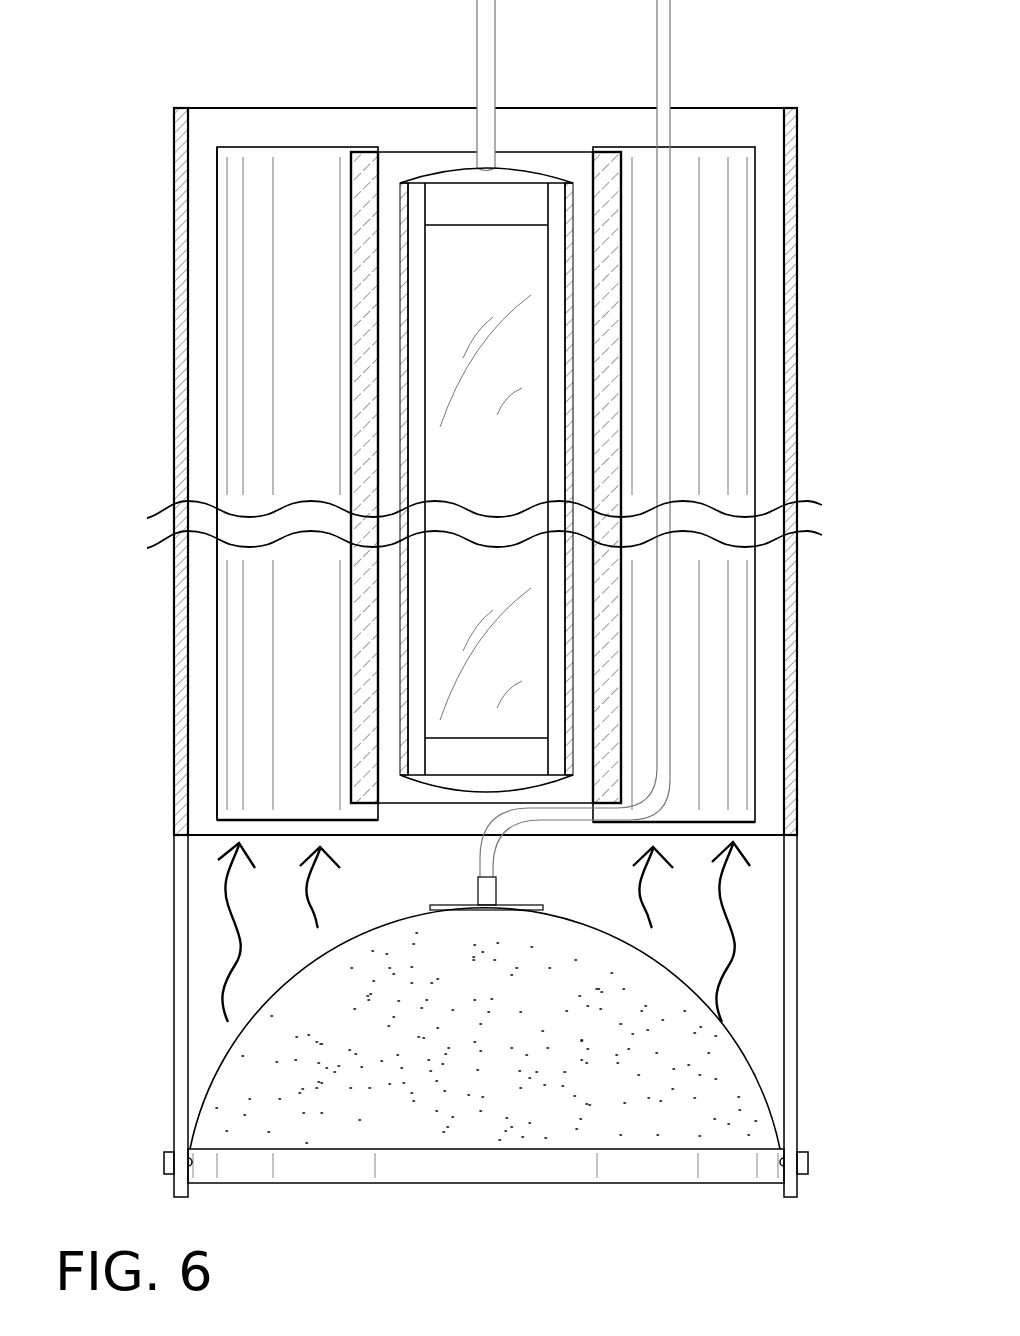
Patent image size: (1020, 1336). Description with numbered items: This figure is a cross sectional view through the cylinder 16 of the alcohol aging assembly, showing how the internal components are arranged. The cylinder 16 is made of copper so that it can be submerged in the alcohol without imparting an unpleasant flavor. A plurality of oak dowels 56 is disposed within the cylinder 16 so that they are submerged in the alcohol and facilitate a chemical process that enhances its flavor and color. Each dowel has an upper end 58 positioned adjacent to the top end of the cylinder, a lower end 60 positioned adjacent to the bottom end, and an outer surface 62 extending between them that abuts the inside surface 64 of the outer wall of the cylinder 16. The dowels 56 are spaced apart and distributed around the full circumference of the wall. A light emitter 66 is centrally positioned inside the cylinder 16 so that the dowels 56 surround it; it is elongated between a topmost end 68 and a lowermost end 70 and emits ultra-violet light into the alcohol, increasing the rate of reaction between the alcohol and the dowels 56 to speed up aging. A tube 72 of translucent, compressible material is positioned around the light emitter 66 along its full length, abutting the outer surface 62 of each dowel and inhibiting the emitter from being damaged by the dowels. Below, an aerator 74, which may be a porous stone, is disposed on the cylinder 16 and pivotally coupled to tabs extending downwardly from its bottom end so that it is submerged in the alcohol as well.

The cylinder 16 is at (173, 263).
The dowels 56 is at (216, 156).
The upper end 58 is at (297, 147).
The lower end 60 is at (223, 820).
The outer surface 62 is at (258, 373).
The inside surface 64 is at (188, 573).
The light emitter 66 is at (548, 210).
The topmost end 68 is at (438, 180).
The lowermost end 70 is at (523, 782).
The tube 72 is at (400, 197).
The aerator 74 is at (738, 1053).